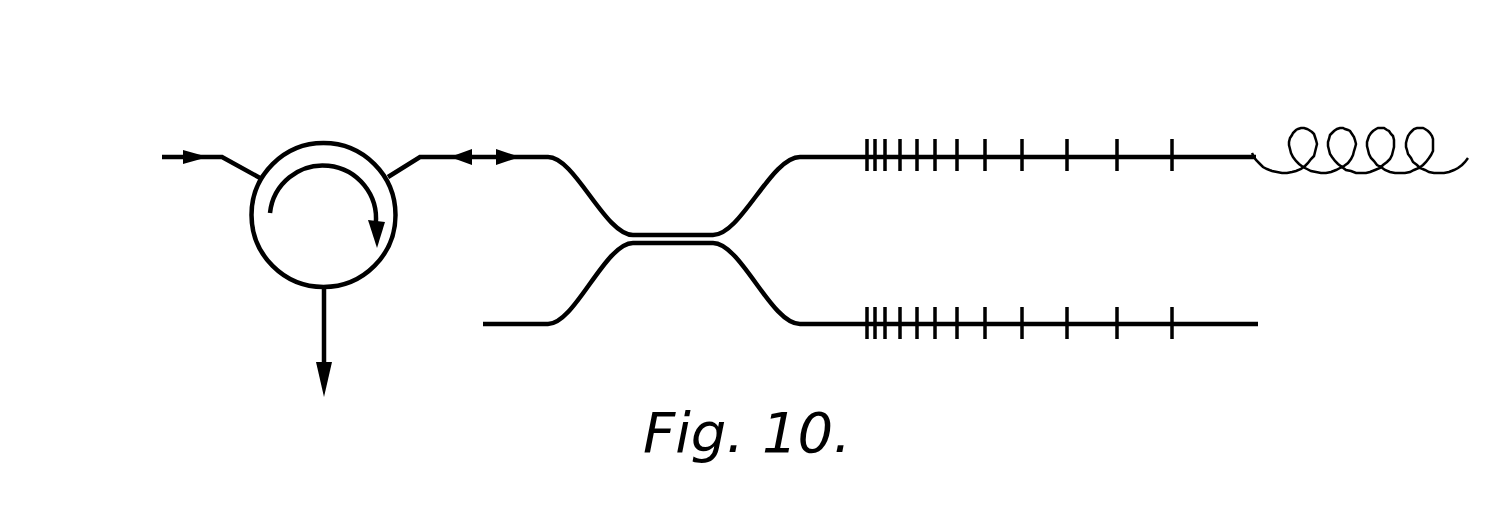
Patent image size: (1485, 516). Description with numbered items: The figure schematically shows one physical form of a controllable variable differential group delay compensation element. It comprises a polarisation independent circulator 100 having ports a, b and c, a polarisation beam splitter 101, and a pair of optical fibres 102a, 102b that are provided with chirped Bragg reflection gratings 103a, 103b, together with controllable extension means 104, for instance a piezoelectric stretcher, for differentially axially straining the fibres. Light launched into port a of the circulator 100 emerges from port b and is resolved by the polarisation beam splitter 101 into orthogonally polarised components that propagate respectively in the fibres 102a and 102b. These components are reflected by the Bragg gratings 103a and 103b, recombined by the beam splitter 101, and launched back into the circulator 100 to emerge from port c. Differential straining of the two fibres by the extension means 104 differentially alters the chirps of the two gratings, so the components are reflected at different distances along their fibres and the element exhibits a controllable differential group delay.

The polarisation independent circulator 100 is at (302, 245).
The polarisation beam splitter 101 is at (675, 242).
The optical fibre 102a is at (1205, 152).
The optical fibre 102b is at (1227, 324).
The chirped Bragg reflection grating 103a is at (1117, 139).
The chirped Bragg reflection grating 103b is at (935, 339).
The controllable extension means 104 is at (1343, 128).